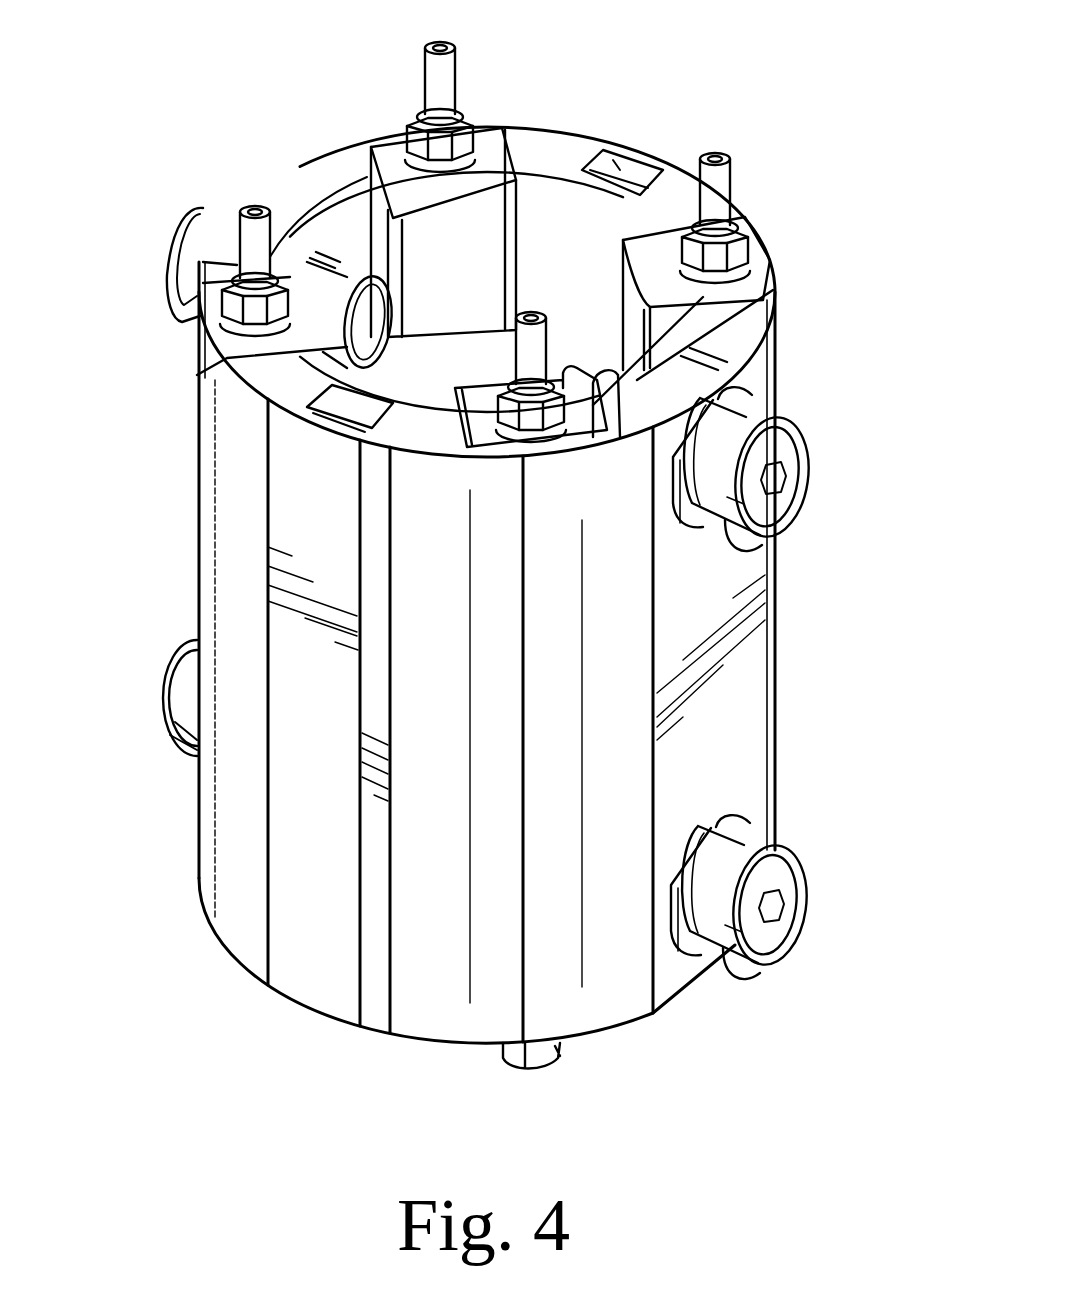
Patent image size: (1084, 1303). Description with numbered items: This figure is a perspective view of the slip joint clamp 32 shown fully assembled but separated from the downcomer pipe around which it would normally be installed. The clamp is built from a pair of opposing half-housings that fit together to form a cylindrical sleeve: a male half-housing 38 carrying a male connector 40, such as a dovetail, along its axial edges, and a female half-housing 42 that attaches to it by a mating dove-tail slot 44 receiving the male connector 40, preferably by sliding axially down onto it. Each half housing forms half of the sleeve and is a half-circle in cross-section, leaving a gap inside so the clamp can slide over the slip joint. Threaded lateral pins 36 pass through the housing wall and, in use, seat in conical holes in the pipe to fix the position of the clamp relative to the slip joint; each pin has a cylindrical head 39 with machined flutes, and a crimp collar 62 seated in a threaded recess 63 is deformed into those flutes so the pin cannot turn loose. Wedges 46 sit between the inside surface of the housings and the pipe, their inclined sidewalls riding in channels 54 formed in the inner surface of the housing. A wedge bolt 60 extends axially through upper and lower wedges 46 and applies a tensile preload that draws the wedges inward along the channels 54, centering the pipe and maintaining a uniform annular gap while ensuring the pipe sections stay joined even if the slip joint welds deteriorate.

The slip joint clamp 32 is at (861, 116).
The lateral pin 36 is at (373, 275).
The male half-housing 38 is at (571, 609).
The cylindrical head 39 is at (758, 560).
The male connector 40 is at (613, 167).
The female half-housing 42 is at (197, 538).
The dove-tail slot 44 is at (578, 155).
The wedge 46 is at (397, 157).
The channel 54 is at (507, 140).
The wedge bolt 60 is at (247, 207).
The crimp collar 62 is at (712, 397).
The threaded recess 63 is at (753, 387).